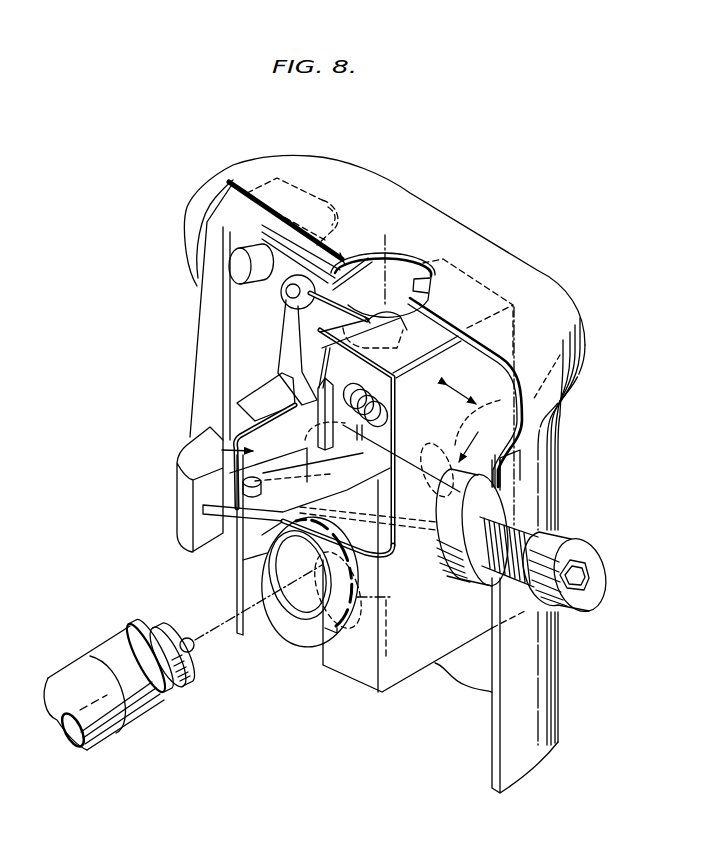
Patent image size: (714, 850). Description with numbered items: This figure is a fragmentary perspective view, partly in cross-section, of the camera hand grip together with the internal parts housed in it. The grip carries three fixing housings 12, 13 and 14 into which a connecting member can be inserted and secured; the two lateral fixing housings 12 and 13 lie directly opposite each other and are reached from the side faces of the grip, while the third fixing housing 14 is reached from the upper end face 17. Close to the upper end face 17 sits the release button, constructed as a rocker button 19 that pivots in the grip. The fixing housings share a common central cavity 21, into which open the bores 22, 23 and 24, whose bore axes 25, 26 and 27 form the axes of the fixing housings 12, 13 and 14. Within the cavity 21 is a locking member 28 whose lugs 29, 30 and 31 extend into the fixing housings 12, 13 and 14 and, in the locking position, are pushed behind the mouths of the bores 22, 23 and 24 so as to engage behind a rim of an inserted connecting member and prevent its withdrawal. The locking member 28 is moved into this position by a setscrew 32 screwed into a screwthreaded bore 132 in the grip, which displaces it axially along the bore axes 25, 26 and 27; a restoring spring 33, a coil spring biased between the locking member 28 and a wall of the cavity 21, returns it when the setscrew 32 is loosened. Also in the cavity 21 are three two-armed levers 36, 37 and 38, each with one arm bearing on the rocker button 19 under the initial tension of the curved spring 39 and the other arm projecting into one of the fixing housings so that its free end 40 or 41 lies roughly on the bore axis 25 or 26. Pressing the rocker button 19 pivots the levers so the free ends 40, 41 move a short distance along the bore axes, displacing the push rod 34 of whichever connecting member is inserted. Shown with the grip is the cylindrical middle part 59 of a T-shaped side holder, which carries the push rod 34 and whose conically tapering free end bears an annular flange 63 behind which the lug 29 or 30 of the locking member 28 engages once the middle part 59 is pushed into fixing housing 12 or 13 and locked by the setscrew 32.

The fixing housing 12 is at (270, 557).
The fixing housing 13 is at (462, 437).
The fixing housing 14 is at (358, 260).
The upper end face 17 is at (432, 223).
The rocker button 19 is at (207, 322).
The central cavity 21 is at (185, 447).
The bore 22 is at (313, 592).
The bore 23 is at (513, 398).
The bore 24 is at (369, 296).
The bore axis 25 is at (240, 593).
The bore axis 26 is at (470, 500).
The bore axis 27 is at (392, 245).
The locking member 28 is at (438, 418).
The lug 29 is at (343, 662).
The lug 30 is at (527, 453).
The lug 31 is at (427, 332).
The setscrew 32 is at (553, 533).
The restoring spring 33 is at (396, 380).
The push rod 34 is at (197, 650).
The two-armed lever 36 is at (330, 513).
The two-armed lever 37 is at (300, 463).
The two-armed lever 38 is at (298, 333).
The curved spring 39 is at (257, 422).
The free end 40 is at (361, 590).
The free end 41 is at (433, 457).
The middle part 59 is at (70, 677).
The annular flange 63 is at (153, 622).
The screwthreaded bore 132 is at (472, 584).